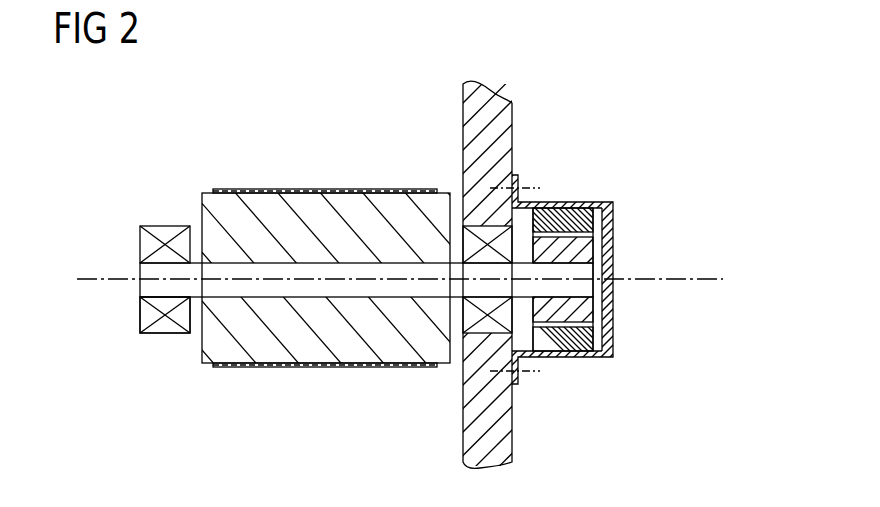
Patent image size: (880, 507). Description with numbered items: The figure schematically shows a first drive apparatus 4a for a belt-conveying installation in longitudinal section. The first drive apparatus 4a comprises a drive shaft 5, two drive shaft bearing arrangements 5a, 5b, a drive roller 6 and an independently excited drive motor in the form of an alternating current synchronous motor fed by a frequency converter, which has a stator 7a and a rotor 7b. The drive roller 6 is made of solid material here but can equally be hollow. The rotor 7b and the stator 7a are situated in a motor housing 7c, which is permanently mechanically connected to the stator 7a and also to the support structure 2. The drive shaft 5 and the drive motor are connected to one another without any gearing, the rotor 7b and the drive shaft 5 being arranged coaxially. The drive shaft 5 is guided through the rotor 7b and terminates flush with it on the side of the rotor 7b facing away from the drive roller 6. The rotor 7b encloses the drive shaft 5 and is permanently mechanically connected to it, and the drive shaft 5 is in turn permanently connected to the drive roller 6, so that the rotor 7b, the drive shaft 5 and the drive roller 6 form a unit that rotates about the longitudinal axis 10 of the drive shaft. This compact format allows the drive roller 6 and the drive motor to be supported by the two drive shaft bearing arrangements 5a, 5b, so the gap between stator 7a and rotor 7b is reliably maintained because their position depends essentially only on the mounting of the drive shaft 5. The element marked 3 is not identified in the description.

The support structure 2 is at (512, 111).
The rotor 3 is at (322, 193).
The first drive apparatus 4a is at (216, 132).
The drive shaft 5 is at (140, 270).
The drive shaft bearing arrangement 5a is at (165, 333).
The drive shaft bearing arrangement 5b is at (462, 372).
The drive roller 6 is at (385, 207).
The stator 7a is at (588, 216).
The rotor 7b is at (588, 251).
The motor housing 7c is at (587, 202).
The longitudinal axis 10 is at (713, 279).